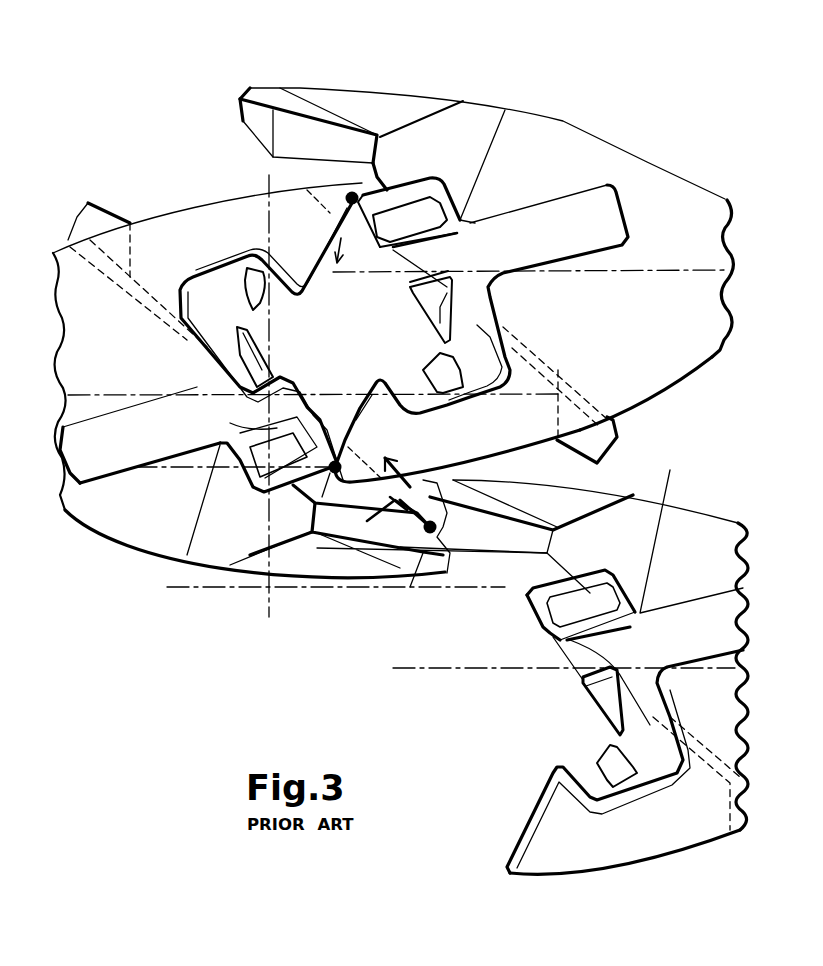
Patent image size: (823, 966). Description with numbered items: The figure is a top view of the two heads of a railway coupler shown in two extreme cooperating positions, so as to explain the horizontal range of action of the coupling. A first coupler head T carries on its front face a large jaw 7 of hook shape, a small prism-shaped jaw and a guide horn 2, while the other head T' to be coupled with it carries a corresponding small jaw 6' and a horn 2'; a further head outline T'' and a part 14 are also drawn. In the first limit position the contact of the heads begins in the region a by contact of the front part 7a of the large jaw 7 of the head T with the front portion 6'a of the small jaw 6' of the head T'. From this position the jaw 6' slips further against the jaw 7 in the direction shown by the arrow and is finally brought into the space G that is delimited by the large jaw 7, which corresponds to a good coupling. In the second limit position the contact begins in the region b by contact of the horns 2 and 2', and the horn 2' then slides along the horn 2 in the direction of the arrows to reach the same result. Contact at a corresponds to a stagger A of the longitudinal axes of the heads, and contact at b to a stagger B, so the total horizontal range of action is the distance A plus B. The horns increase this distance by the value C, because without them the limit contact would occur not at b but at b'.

The coupler head T is at (249, 371).
The other coupler head T' is at (486, 280).
The adjacent chipper disc T'' is at (574, 665).
The large jaw 7 is at (300, 244).
The front part of the large jaw 7a is at (345, 197).
The small jaw 6' is at (416, 263).
The front portion of the small jaw 6'a is at (393, 115).
The knife clamp 14 is at (383, 502).
The guide horn 2 is at (387, 569).
The guide horn of the other head 2' is at (506, 551).
The contact region a is at (353, 193).
The contact region b is at (404, 589).
The limit contact point without horns b' is at (317, 554).
The space delimited by the large jaw G is at (235, 327).
The stagger A is at (357, 273).
The stagger B is at (518, 668).
The contribution of the horns C is at (187, 587).